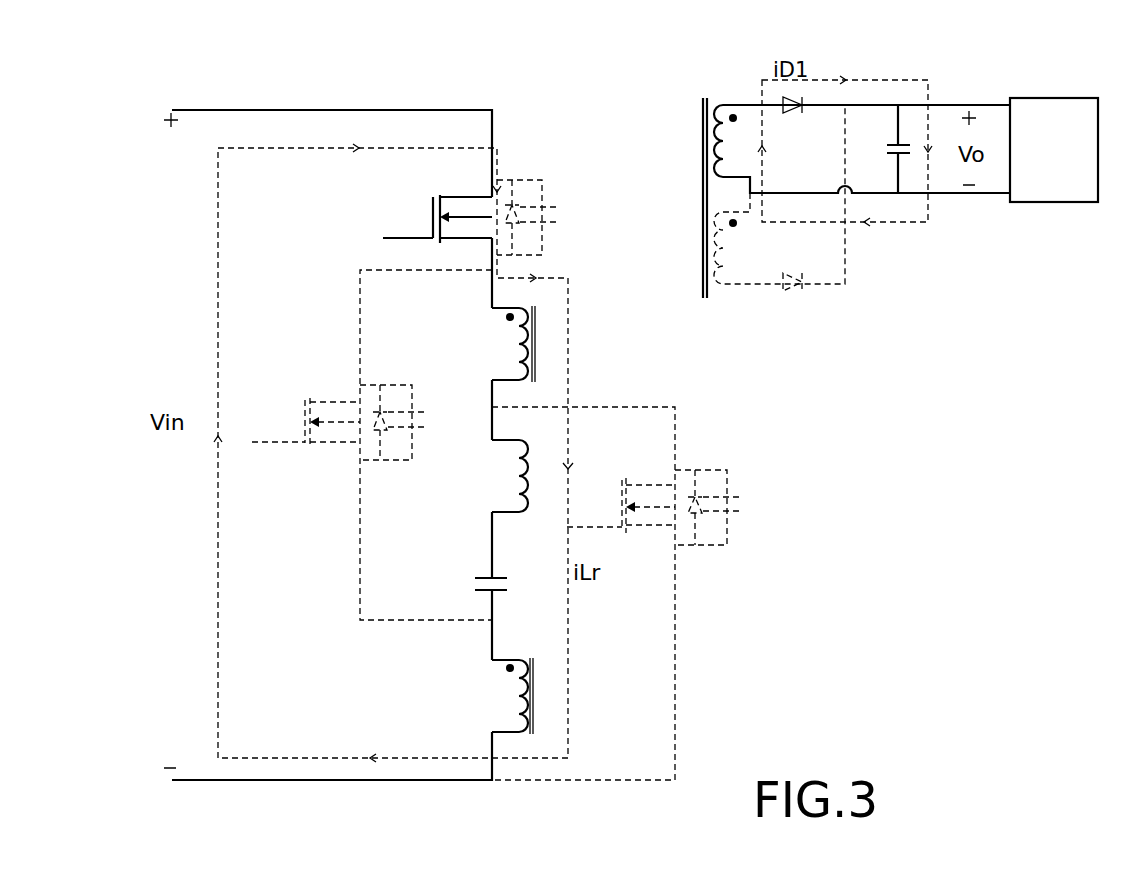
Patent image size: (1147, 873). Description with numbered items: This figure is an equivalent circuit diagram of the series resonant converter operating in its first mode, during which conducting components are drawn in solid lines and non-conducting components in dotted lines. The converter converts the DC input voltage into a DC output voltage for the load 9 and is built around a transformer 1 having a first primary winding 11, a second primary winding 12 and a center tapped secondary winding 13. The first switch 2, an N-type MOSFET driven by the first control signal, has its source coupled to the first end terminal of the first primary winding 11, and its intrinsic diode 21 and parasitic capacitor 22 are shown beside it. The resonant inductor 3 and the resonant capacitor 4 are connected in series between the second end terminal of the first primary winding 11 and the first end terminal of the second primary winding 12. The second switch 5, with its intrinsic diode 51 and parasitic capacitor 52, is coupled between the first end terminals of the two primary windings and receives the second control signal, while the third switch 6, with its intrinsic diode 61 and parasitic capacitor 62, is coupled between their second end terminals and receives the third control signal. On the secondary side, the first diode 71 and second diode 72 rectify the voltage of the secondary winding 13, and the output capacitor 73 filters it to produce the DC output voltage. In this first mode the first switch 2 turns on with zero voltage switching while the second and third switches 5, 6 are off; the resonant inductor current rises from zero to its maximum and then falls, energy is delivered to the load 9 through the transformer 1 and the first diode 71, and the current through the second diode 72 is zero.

The transformer 1 is at (686, 92).
The first switch 2 is at (456, 197).
The intrinsic diode 21 is at (512, 200).
The parasitic capacitor 22 is at (546, 207).
The resonant inductor 3 is at (521, 468).
The resonant capacitor 4 is at (488, 578).
The second switch 5 is at (325, 444).
The intrinsic diode 51 is at (381, 432).
The parasitic capacitor 52 is at (425, 428).
The third switch 6 is at (648, 528).
The intrinsic diode 61 is at (695, 514).
The parasitic capacitor 62 is at (738, 512).
The load 9 is at (1048, 202).
The first primary winding 11 is at (521, 337).
The second primary winding 12 is at (522, 704).
The secondary winding 13 is at (733, 255).
The first diode 71 is at (793, 114).
The second diode 72 is at (790, 286).
The output capacitor 73 is at (905, 155).